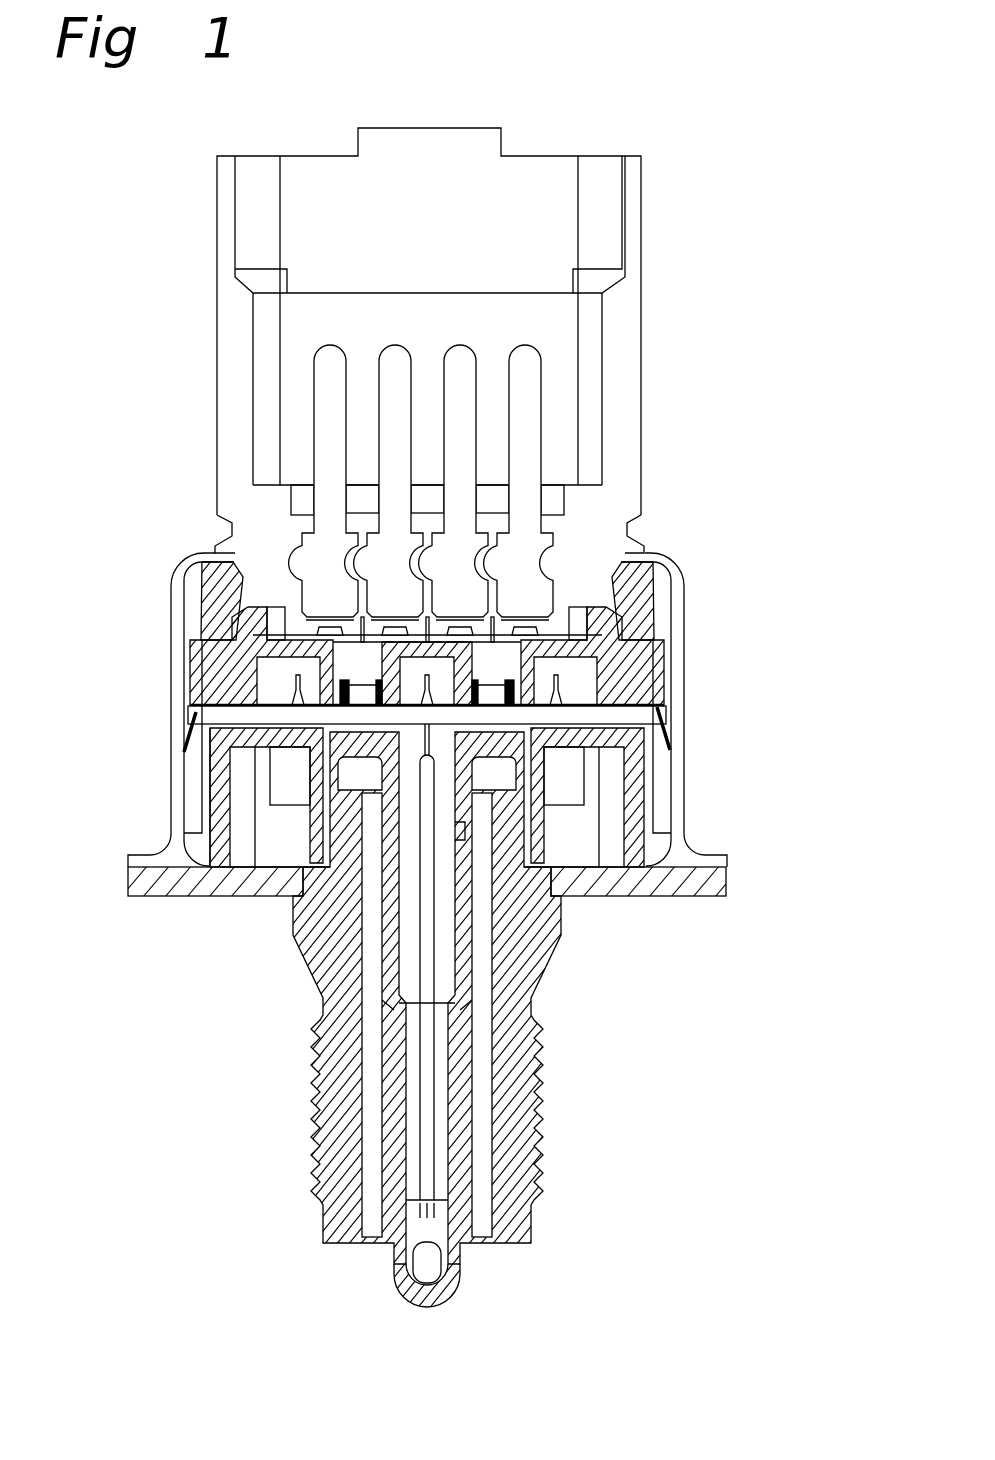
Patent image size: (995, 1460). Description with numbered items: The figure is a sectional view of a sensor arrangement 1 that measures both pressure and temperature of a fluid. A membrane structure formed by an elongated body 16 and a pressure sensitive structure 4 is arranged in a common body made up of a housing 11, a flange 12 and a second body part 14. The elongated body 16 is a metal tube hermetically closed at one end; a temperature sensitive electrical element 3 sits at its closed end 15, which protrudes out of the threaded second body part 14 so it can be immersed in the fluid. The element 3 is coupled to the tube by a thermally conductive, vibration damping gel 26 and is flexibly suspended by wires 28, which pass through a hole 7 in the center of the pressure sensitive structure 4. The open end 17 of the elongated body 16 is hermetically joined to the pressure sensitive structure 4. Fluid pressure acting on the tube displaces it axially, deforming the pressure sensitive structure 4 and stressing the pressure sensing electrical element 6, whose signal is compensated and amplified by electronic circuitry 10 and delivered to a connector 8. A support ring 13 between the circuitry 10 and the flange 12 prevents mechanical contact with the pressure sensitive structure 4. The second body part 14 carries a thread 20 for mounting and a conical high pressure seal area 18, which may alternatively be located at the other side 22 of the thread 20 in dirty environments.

The sensor arrangement 1 is at (662, 263).
The temperature sensitive electrical element 3 is at (425, 1265).
The pressure sensitive structure 4 is at (534, 730).
The pressure sensing electrical element 6 is at (327, 715).
The hole 7 is at (439, 752).
The connector 8 is at (560, 412).
The electronic circuitry 10 is at (603, 714).
The housing 11 is at (177, 637).
The flange 12 is at (222, 890).
The support ring 13 is at (260, 788).
The second body part 14 is at (530, 1128).
The closed end 15 is at (427, 1308).
The elongated body 16 is at (458, 1065).
The open end 17 is at (465, 832).
The high pressure seal area 18 is at (298, 935).
The thread 20 is at (312, 1105).
The other side of the thread 22 is at (323, 1243).
The gel 26 is at (412, 1218).
The wires 28 is at (425, 952).